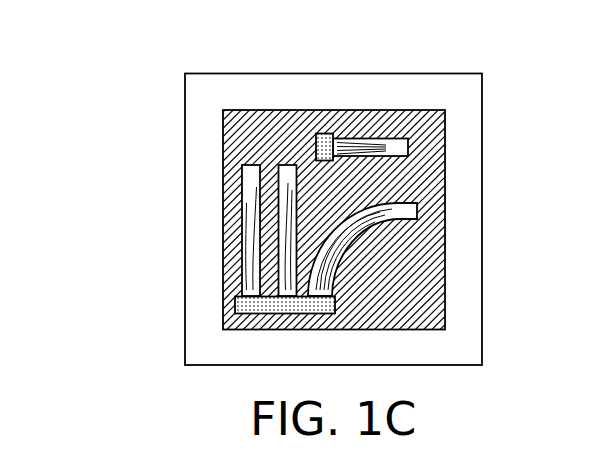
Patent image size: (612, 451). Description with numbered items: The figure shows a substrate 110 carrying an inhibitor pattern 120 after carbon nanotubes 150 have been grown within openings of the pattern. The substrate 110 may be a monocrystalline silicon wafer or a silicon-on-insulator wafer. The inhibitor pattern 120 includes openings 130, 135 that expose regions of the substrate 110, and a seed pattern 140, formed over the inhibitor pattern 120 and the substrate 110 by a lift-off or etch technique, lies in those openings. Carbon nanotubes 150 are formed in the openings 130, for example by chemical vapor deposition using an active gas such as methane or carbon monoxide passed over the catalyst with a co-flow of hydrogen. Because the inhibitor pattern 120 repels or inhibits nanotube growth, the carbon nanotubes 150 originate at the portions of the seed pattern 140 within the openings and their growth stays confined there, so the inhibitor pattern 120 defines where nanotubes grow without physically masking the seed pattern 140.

The substrate 110 is at (213, 74).
The inhibitor pattern 120 is at (382, 110).
The opening 130 is at (418, 212).
The opening 135 is at (243, 170).
The seed pattern 140 is at (330, 133).
The carbon nanotubes 150 is at (245, 228).